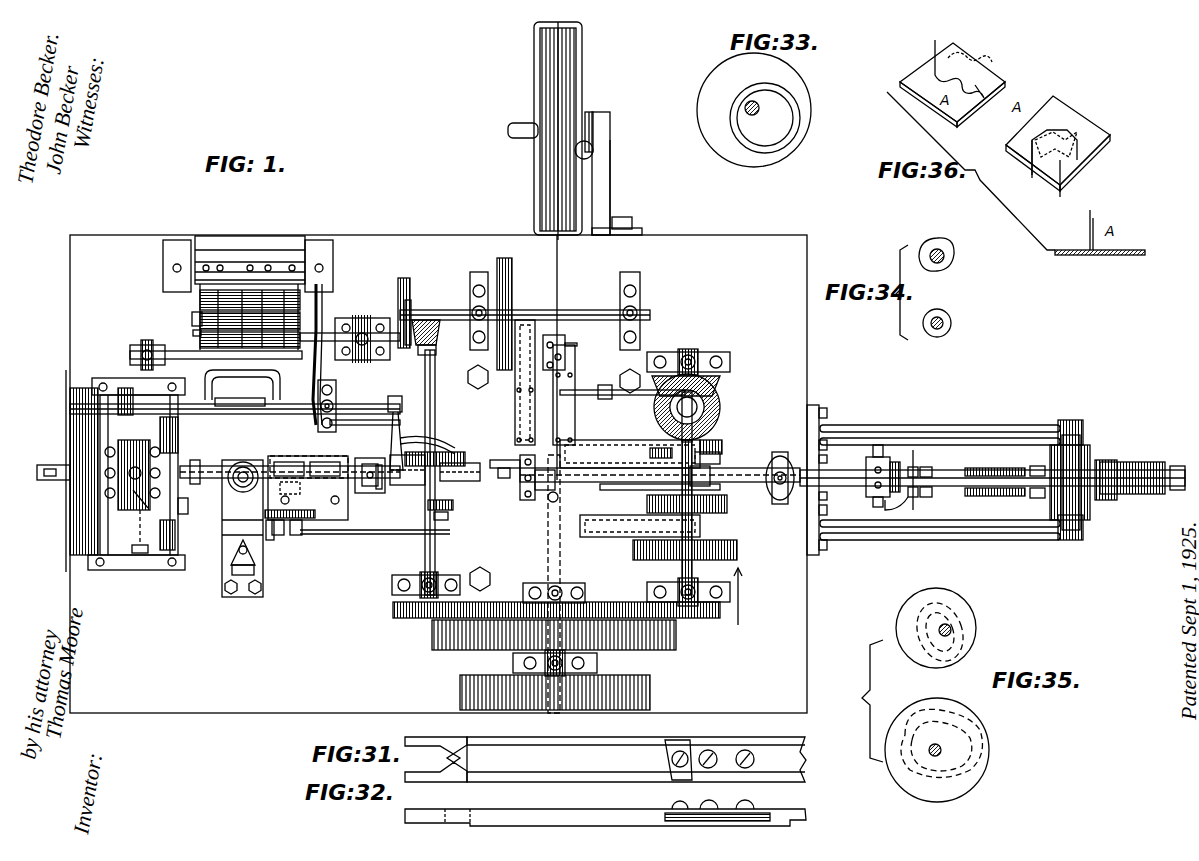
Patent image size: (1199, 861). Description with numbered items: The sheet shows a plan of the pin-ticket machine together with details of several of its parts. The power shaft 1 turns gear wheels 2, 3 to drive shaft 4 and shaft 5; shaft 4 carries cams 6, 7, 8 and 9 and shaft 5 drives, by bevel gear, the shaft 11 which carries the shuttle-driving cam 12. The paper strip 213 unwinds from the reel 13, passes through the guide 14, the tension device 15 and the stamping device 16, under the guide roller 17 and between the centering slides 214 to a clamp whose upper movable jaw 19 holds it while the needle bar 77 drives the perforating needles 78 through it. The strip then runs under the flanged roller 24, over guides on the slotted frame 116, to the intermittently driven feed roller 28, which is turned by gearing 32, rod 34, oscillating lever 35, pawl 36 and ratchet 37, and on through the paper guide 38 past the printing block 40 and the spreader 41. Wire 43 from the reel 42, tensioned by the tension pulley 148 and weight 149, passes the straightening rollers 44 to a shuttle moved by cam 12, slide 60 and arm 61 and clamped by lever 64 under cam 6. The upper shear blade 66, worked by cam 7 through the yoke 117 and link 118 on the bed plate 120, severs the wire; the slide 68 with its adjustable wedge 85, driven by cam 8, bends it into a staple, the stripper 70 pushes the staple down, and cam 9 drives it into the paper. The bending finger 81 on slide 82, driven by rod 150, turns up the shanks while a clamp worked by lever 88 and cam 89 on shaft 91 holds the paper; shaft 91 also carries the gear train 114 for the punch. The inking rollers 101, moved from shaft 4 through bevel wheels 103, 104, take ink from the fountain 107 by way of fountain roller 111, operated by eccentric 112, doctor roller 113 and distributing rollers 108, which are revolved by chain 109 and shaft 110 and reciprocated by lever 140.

In FIG. 1, the power shaft 1 is at (556, 588).
In FIG. 1, the gear wheel 2 is at (688, 616).
In FIG. 1, the gear wheel 3 is at (540, 634).
In FIG. 1, the shaft 4 is at (692, 352).
In FIG. 34, the shaft 4 is at (934, 250).
In FIG. 35, the shaft 4 is at (945, 636).
In FIG. 1, the shaft 5 is at (428, 546).
In FIG. 1, the cam 6 is at (712, 400).
In FIG. 34, the cam 6 is at (946, 254).
In FIG. 1, the cam 7 is at (717, 462).
In FIG. 34, the cam 7 is at (945, 322).
In FIG. 1, the cam 8 is at (696, 506).
In FIG. 35, the cam 8 is at (947, 628).
In FIG. 1, the cam 9 is at (691, 545).
In FIG. 35, the cam 9 is at (937, 748).
In FIG. 1, the shaft 11 is at (598, 318).
In FIG. 33, the shaft 11 is at (756, 114).
In FIG. 1, the shuttle-driving cam 12 is at (510, 268).
In FIG. 33, the shuttle-driving cam 12 is at (754, 110).
In FIG. 1, the reel 13 is at (992, 480).
In FIG. 1, the guide 14 is at (913, 465).
In FIG. 1, the tension device 15 is at (868, 490).
In FIG. 1, the stamping device 16 is at (778, 460).
In FIG. 1, the guide roller 17 is at (710, 475).
In FIG. 1, the upper movable jaw 19 is at (522, 500).
In FIG. 1, the flanged roller 24 is at (400, 486).
In FIG. 1, the feed roller 28 is at (320, 475).
In FIG. 1, the gearing 32 is at (445, 521).
In FIG. 1, the rod 34 is at (375, 523).
In FIG. 1, the oscillating lever 35 is at (300, 524).
In FIG. 1, the pawl 36 is at (263, 512).
In FIG. 1, the ratchet 37 is at (316, 514).
In FIG. 1, the paper guide 38 is at (210, 498).
In FIG. 1, the printing block 40 is at (216, 466).
In FIG. 1, the spreader 41 is at (184, 484).
In FIG. 1, the reel 42 is at (582, 73).
In FIG. 1, the wire 43 is at (569, 357).
In FIG. 1, the straightening rollers 44 is at (560, 345).
In FIG. 1, the slide 60 is at (522, 398).
In FIG. 1, the arm 61 is at (553, 405).
In FIG. 1, the lever 64 is at (577, 394).
In FIG. 1, the upper shear blade 66 is at (660, 444).
In FIG. 1, the slide 68 is at (722, 489).
In FIG. 31, the slide 68 is at (668, 755).
In FIG. 32, the slide 68 is at (605, 808).
In FIG. 1, the stripper 70 is at (435, 452).
In FIG. 1, the needle bar 77 is at (460, 471).
In FIG. 1, the perforating needles 78 is at (510, 466).
In FIG. 1, the bending finger 81 is at (378, 500).
In FIG. 1, the slide 82 is at (360, 480).
In FIG. 31, the adjustable wedge 85 is at (680, 748).
In FIG. 32, the adjustable wedge 85 is at (680, 812).
In FIG. 1, the lever 88 is at (246, 418).
In FIG. 1, the cam 89 is at (393, 408).
In FIG. 1, the shaft 91 is at (348, 415).
In FIG. 1, the inking rollers 101 is at (270, 397).
In FIG. 1, the bevel wheel 103 is at (655, 385).
In FIG. 1, the bevel wheel 104 is at (660, 418).
In FIG. 1, the fountain 107 is at (282, 286).
In FIG. 1, the distributing rollers 108 is at (404, 280).
In FIG. 1, the chain 109 is at (398, 300).
In FIG. 1, the shaft 110 is at (362, 330).
In FIG. 1, the fountain roller 111 is at (212, 298).
In FIG. 1, the eccentric 112 is at (302, 360).
In FIG. 1, the doctor roller 113 is at (199, 316).
In FIG. 1, the gear train 114 is at (100, 410).
In FIG. 1, the slotted frame 116 is at (312, 488).
In FIG. 1, the yoke 117 is at (708, 454).
In FIG. 1, the link 118 is at (636, 446).
In FIG. 1, the bed plate 120 is at (437, 630).
In FIG. 1, the lever 140 is at (147, 350).
In FIG. 1, the tension pulley 148 is at (592, 120).
In FIG. 1, the weight 149 is at (588, 160).
In FIG. 1, the rod 150 is at (445, 448).
In FIG. 1, the paper strip 213 is at (928, 484).
In FIG. 1, the centering slides 214 is at (546, 500).